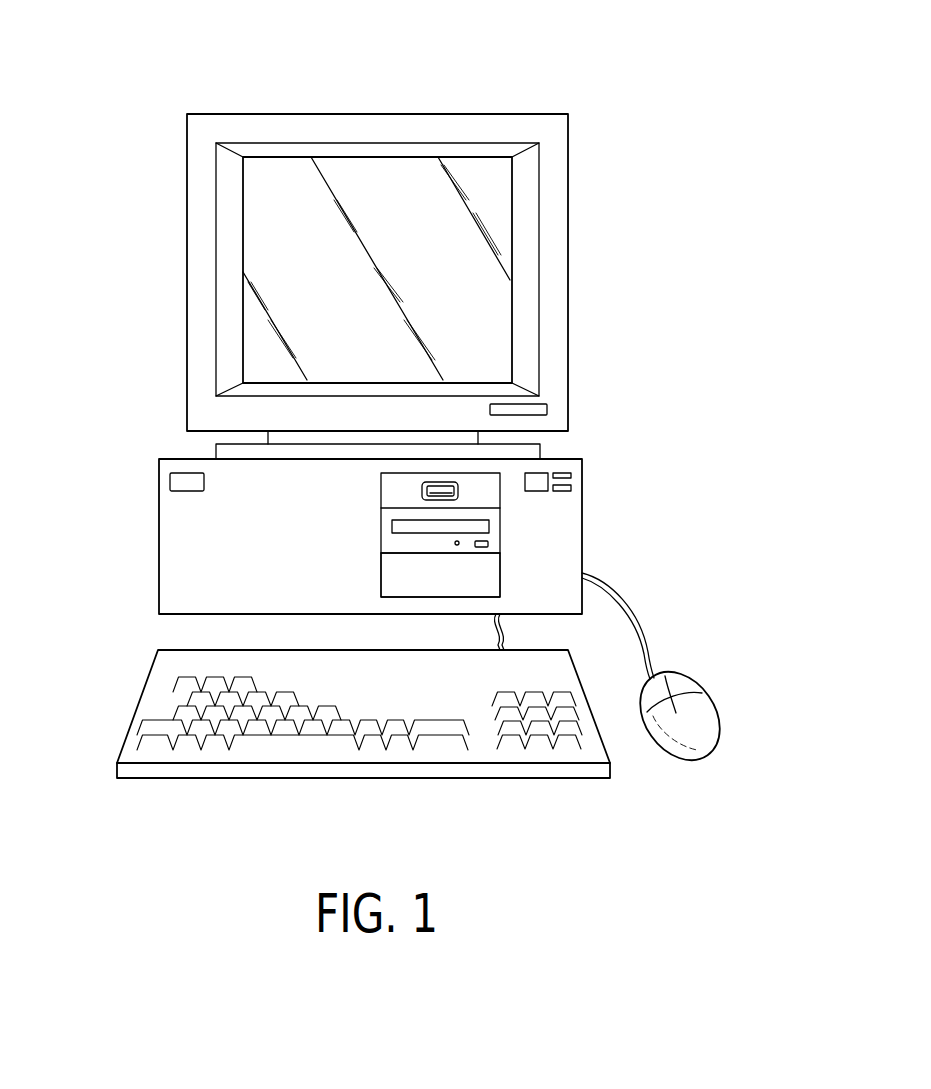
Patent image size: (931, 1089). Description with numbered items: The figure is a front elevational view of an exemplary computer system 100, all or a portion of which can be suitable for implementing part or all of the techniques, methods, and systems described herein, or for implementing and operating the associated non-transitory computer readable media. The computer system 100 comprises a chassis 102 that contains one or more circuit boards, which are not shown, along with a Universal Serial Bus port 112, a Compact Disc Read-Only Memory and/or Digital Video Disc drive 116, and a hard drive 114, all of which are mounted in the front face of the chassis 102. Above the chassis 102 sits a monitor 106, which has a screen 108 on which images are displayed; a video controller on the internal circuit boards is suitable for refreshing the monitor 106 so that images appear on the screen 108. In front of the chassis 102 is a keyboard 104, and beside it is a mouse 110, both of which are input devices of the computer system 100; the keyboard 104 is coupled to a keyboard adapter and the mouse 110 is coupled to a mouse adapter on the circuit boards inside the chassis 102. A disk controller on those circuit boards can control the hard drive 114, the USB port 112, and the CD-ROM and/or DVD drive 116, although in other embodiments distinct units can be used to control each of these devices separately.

The computer system 100 is at (572, 80).
The chassis 102 is at (158, 535).
The keyboard 104 is at (137, 688).
The monitor 106 is at (263, 113).
The screen 108 is at (292, 273).
The mouse 110 is at (700, 703).
The Universal Serial Bus (USB) port 112 is at (458, 490).
The hard drive 114 is at (490, 574).
The CD-ROM and/or DVD drive 116 is at (490, 533).